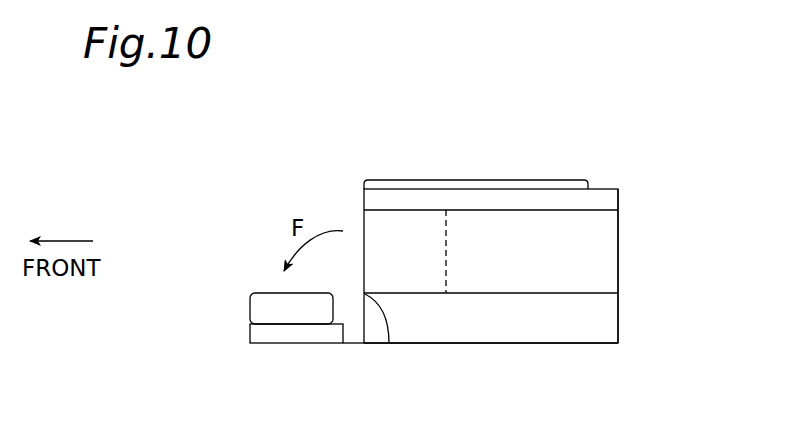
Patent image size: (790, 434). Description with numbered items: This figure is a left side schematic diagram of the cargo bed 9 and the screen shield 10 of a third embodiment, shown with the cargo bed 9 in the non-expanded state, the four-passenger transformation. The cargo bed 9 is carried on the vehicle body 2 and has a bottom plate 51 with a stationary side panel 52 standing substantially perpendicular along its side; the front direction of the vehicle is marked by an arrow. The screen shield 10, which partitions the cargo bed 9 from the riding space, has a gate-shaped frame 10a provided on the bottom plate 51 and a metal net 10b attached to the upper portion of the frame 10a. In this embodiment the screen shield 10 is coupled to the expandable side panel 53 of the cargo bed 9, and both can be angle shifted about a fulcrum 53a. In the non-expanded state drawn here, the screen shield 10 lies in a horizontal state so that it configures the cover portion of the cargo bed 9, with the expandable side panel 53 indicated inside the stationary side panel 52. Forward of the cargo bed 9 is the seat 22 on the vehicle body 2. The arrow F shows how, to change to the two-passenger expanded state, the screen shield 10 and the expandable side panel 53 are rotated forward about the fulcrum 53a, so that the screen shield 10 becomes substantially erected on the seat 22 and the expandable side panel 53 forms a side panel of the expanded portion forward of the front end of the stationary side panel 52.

The screen shield 10 is at (529, 246).
The frame 10a is at (608, 198).
The metal net 10b is at (498, 188).
The stationary side panel 52 is at (598, 253).
The bottom plate 51 is at (502, 328).
The expandable side panel 53 is at (405, 237).
The fulcrum 53a is at (389, 343).
The seat 22 is at (236, 291).
The vehicle body 2 is at (303, 333).
The cargo bed 9 is at (675, 290).